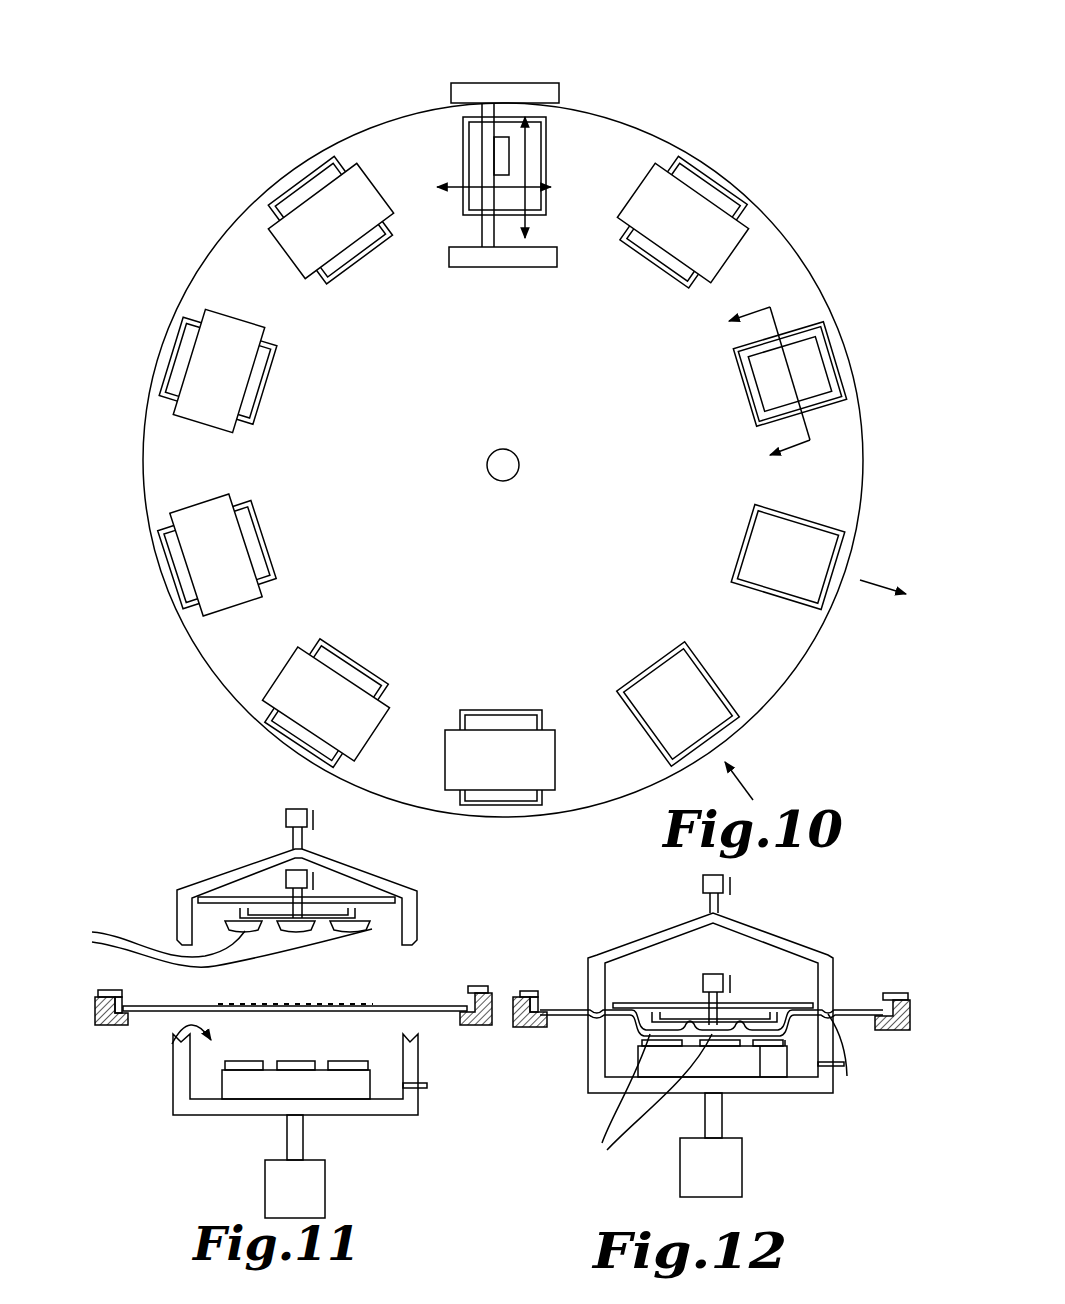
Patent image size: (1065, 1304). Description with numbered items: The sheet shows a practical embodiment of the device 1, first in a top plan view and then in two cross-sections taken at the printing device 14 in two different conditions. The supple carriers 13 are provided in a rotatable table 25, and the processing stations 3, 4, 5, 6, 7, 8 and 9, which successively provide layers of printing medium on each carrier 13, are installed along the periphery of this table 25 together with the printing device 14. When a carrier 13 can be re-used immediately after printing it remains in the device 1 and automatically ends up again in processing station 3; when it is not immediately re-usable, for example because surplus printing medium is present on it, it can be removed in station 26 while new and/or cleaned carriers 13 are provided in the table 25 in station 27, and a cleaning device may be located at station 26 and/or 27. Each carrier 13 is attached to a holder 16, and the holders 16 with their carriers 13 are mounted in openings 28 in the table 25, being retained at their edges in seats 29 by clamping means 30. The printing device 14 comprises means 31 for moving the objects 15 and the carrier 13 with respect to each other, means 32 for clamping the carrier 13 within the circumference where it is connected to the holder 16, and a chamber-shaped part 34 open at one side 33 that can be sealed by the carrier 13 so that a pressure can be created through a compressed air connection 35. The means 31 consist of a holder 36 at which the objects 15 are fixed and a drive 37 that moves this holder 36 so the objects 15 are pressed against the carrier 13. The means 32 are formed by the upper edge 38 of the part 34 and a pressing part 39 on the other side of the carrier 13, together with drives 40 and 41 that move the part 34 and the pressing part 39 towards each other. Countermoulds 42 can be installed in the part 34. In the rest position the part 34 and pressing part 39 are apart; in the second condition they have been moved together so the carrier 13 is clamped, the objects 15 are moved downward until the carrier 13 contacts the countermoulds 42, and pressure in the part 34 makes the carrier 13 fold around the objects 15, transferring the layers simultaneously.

In FIG. 10, the device 1 is at (800, 142).
In FIG. 10, the processing station 3 is at (505, 815).
In FIG. 10, the processing station 4 is at (284, 734).
In FIG. 10, the processing station 5 is at (201, 621).
In FIG. 10, the processing station 6 is at (168, 424).
In FIG. 10, the processing station 7 is at (260, 223).
In FIG. 10, the processing station 8 is at (517, 70).
In FIG. 10, the processing station 9 is at (758, 210).
In FIG. 11, the carrier 13 is at (152, 1011).
In FIG. 12, the carrier 13 is at (855, 1010).
In FIG. 10, the printing device 14 is at (840, 366).
In FIG. 11, the object 15 is at (215, 944).
In FIG. 12, the object 15 is at (643, 1098).
In FIG. 10, the holder 16 is at (321, 166).
In FIG. 11, the holder 16 is at (108, 1012).
In FIG. 12, the holder 16 is at (893, 1032).
In FIG. 10, the rotatable table 25 is at (612, 806).
In FIG. 10, the station 26 is at (822, 545).
In FIG. 10, the station 27 is at (712, 720).
In FIG. 11, the opening 28 is at (96, 1008).
In FIG. 12, the opening 28 is at (530, 994).
In FIG. 10, the seat 29 is at (752, 212).
In FIG. 11, the clamping means 30 is at (101, 990).
In FIG. 12, the clamping means 30 is at (525, 991).
In FIG. 11, the means for moving 31 is at (325, 887).
In FIG. 12, the means for moving 31 is at (742, 986).
In FIG. 11, the means for gripping 32 is at (414, 1025).
In FIG. 11, the open side 33 is at (176, 1038).
In FIG. 11, the chamber-shaped part 34 is at (210, 1108).
In FIG. 12, the chamber-shaped part 34 is at (681, 1092).
In FIG. 11, the compressed air connection 35 is at (427, 1092).
In FIG. 12, the compressed air connection 35 is at (847, 1076).
In FIG. 11, the holder 36 is at (348, 916).
In FIG. 12, the holder 36 is at (764, 1016).
In FIG. 11, the drive 37 is at (283, 876).
In FIG. 12, the drive 37 is at (719, 974).
In FIG. 11, the upper edge 38 is at (418, 1036).
In FIG. 12, the upper edge 38 is at (841, 1067).
In FIG. 11, the pressing part 39 is at (412, 933).
In FIG. 12, the pressing part 39 is at (826, 982).
In FIG. 11, the drive 40 is at (323, 1206).
In FIG. 12, the drive 40 is at (732, 1189).
In FIG. 11, the drive 41 is at (286, 818).
In FIG. 12, the drive 41 is at (702, 886).
In FIG. 11, the countermould 42 is at (336, 1072).
In FIG. 12, the countermould 42 is at (757, 1034).